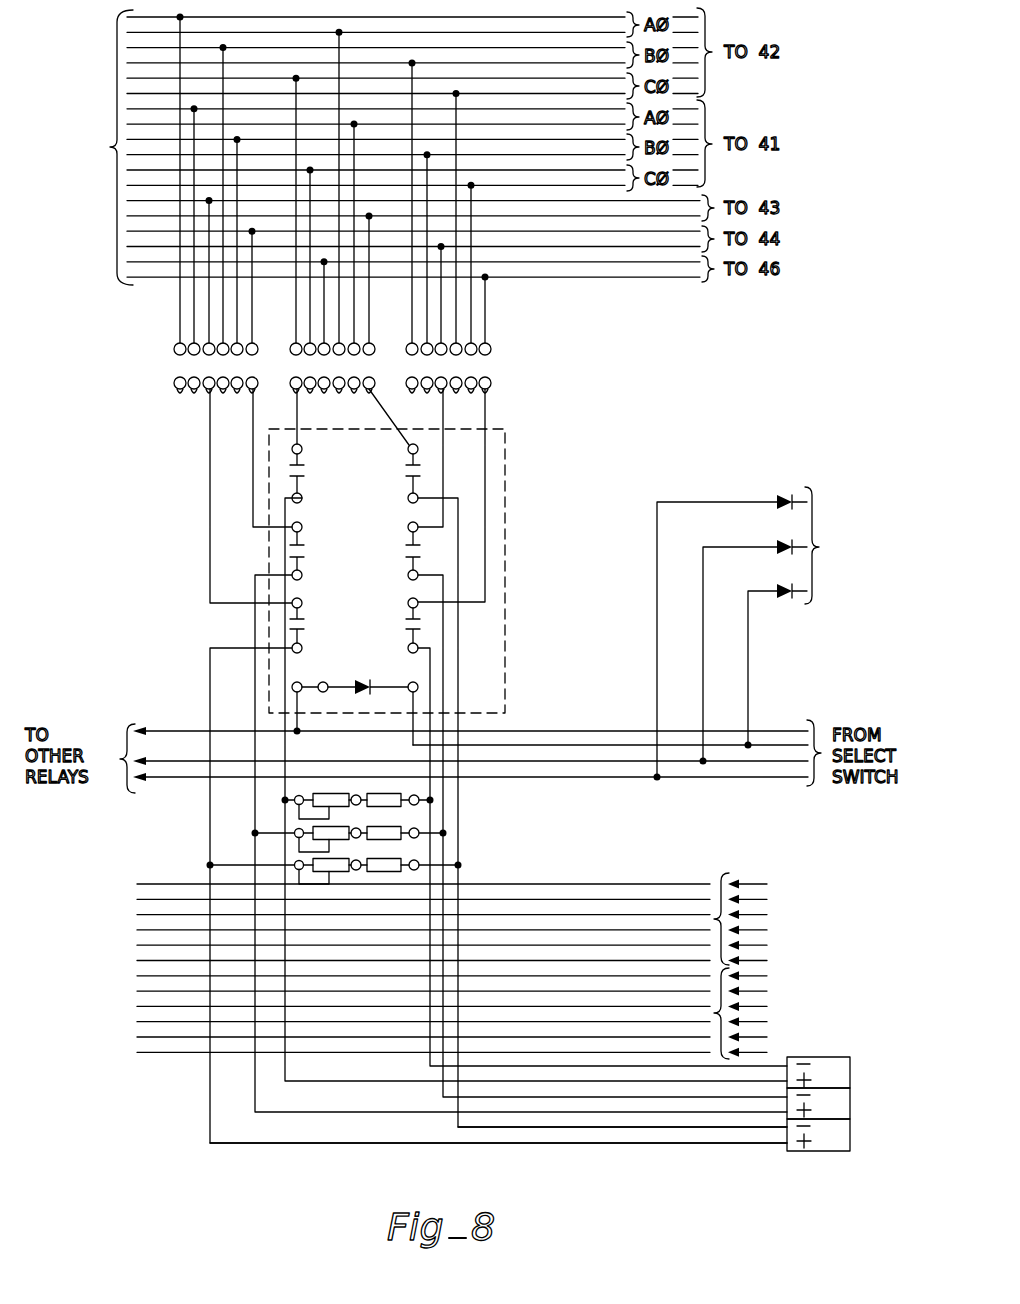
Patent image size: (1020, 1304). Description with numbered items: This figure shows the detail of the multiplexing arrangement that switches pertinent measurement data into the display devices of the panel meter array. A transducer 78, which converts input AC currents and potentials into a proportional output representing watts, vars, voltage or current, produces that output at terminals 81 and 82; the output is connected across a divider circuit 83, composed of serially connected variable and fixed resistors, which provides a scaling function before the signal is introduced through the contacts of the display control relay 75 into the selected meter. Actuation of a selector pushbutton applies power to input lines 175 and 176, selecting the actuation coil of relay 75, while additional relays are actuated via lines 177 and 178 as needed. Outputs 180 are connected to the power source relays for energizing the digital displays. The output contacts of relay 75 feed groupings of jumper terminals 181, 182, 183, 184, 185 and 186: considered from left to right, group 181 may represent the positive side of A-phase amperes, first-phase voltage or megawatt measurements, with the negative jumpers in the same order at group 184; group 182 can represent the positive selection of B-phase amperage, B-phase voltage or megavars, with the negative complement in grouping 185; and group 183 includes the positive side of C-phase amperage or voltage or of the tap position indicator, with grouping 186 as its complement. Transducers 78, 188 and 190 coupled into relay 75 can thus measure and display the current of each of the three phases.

The jumper terminal group 181 is at (193, 395).
The jumper terminal group 182 is at (236, 397).
The jumper terminal group 183 is at (310, 397).
The jumper terminal group 184 is at (354, 397).
The jumper terminal group 185 is at (471, 397).
The jumper terminal group 186 is at (428, 397).
The display control relay 75 is at (504, 533).
The outputs 180 is at (759, 634).
The input line 175 is at (546, 730).
The input line 176 is at (607, 745).
The line 177 is at (515, 762).
The line 178 is at (600, 778).
The divider circuit 83 is at (470, 836).
The transducer 190 is at (835, 1073).
The transducer 188 is at (838, 1106).
The transducer 78 is at (838, 1139).
The output terminal 81 is at (355, 1145).
The output terminal 82 is at (620, 1129).